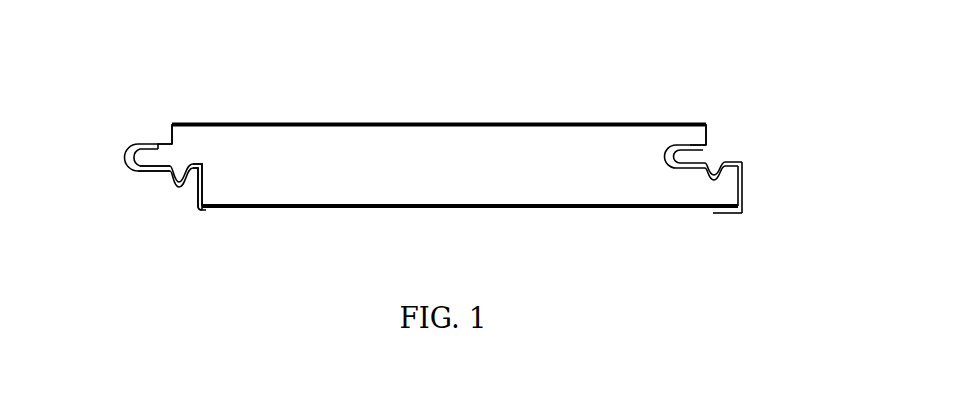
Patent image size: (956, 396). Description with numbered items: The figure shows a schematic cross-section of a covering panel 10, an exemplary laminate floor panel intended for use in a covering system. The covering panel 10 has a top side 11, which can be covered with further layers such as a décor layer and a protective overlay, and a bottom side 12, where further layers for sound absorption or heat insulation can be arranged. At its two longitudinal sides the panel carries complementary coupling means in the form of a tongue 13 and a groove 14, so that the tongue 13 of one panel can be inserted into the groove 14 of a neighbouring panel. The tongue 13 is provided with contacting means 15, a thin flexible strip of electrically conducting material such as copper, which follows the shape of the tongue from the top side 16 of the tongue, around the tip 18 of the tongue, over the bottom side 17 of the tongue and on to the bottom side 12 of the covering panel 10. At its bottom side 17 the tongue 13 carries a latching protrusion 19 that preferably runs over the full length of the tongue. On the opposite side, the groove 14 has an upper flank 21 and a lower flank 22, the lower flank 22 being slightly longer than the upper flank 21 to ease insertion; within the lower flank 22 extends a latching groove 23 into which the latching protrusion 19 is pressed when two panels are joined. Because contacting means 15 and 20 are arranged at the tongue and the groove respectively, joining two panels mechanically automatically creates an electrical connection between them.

The covering panel 10 is at (465, 107).
The top side 11 is at (237, 122).
The bottom side 12 is at (568, 208).
The tongue 13 is at (140, 142).
The groove 14 is at (693, 157).
The contacting means 15 is at (158, 176).
The top side of the tongue 16 is at (157, 142).
The bottom side of the tongue 17 is at (150, 172).
The tip of the tongue 18 is at (124, 151).
The latching protrusion 19 is at (182, 174).
The contacting means 20 is at (742, 200).
The upper flank 21 is at (693, 132).
The lower flank 22 is at (710, 192).
The latching groove 23 is at (740, 165).